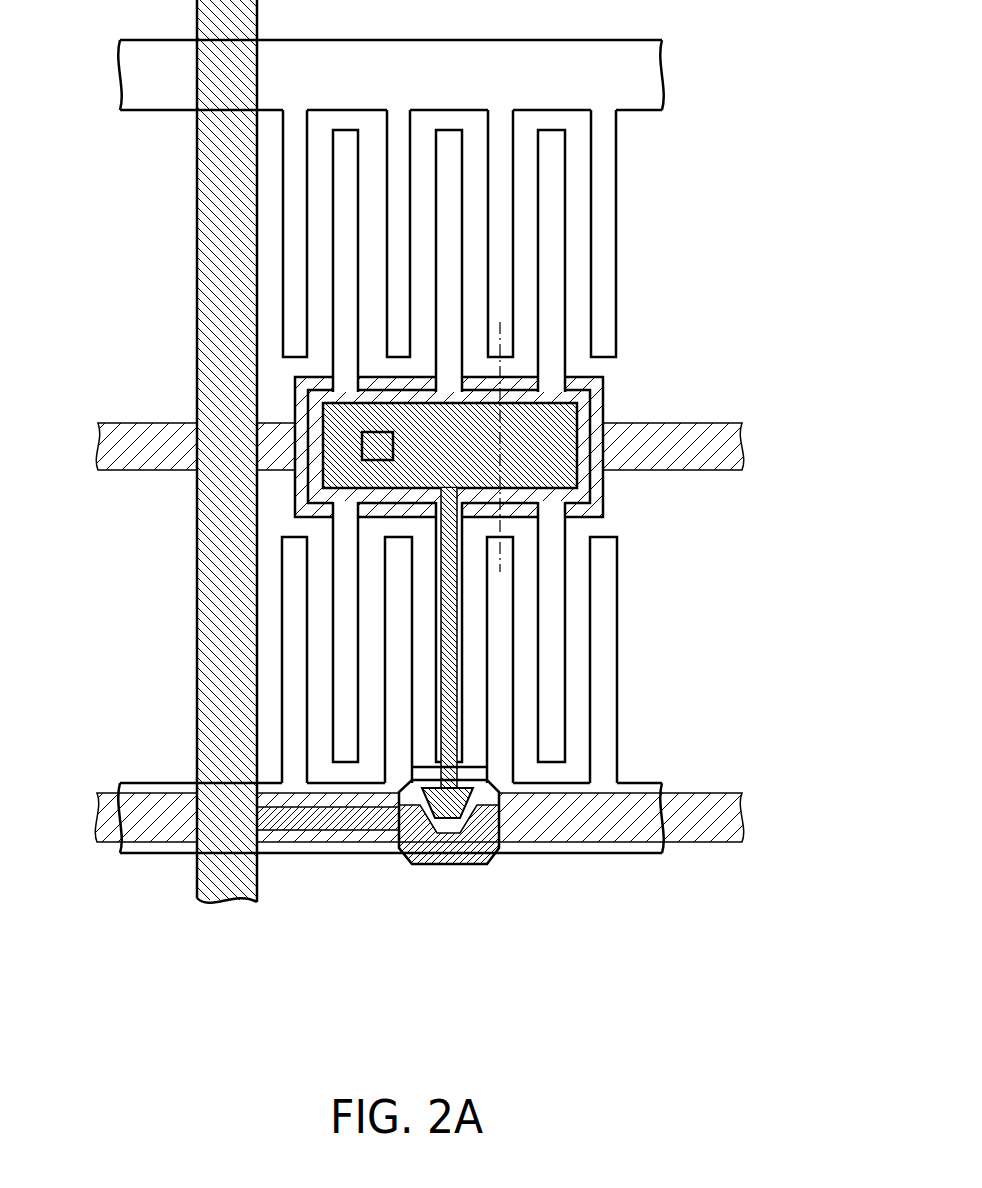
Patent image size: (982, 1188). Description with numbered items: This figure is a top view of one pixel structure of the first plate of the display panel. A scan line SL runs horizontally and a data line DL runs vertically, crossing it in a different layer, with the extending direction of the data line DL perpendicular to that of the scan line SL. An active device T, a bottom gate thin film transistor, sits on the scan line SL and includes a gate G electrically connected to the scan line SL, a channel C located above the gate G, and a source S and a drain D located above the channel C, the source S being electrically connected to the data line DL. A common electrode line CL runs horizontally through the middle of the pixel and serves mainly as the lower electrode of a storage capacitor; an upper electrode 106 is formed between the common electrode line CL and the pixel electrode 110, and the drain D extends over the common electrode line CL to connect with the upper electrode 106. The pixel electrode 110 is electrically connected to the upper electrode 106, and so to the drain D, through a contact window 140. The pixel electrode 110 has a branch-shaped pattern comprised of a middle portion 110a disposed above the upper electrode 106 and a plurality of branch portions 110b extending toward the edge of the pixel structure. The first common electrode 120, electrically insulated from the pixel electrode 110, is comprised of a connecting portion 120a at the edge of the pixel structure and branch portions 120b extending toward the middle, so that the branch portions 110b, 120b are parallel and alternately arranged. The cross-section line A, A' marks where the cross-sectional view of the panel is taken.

The first common electrode 120 is at (474, 446).
The connecting portion 120a is at (625, 74).
The branch portions 120b is at (605, 167).
The pixel electrode 110 is at (582, 446).
The middle portion 110a is at (603, 400).
The branch portions 110b is at (548, 292).
The contact window 140 is at (363, 443).
The upper electrode 106 is at (348, 488).
The common electrode line CL is at (153, 437).
The scan line SL is at (107, 803).
The data line DL is at (227, 877).
The active device T is at (452, 892).
The channel C is at (428, 812).
The gate G is at (449, 892).
The source S is at (458, 845).
The drain D is at (488, 815).
The cross-section line A is at (597, 437).
The cross-section line A' is at (600, 572).